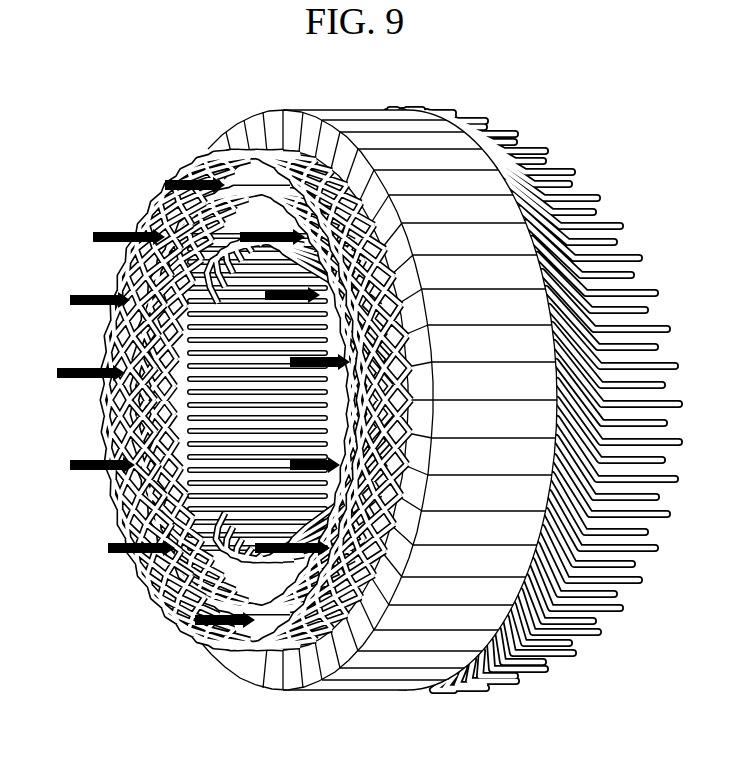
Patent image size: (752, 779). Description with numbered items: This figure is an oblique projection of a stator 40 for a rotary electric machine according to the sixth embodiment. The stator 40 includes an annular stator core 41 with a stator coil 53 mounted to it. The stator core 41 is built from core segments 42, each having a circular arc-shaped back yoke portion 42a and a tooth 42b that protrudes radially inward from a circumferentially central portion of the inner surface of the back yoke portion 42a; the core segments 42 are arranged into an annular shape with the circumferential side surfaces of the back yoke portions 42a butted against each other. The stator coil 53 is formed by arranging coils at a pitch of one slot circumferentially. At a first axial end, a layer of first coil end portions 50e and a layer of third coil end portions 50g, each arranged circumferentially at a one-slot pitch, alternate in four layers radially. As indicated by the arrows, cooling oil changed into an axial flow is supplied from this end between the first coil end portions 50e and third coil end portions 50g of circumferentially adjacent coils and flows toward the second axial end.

The stator 40 is at (135, 112).
The stator core 41 is at (345, 410).
The core segments 42 is at (448, 625).
The back yoke portion 42a is at (385, 600).
The tooth 42b is at (412, 565).
The first coil end portion 50e is at (155, 590).
The third coil end portion 50g is at (188, 640).
The stator coil 53 is at (150, 208).